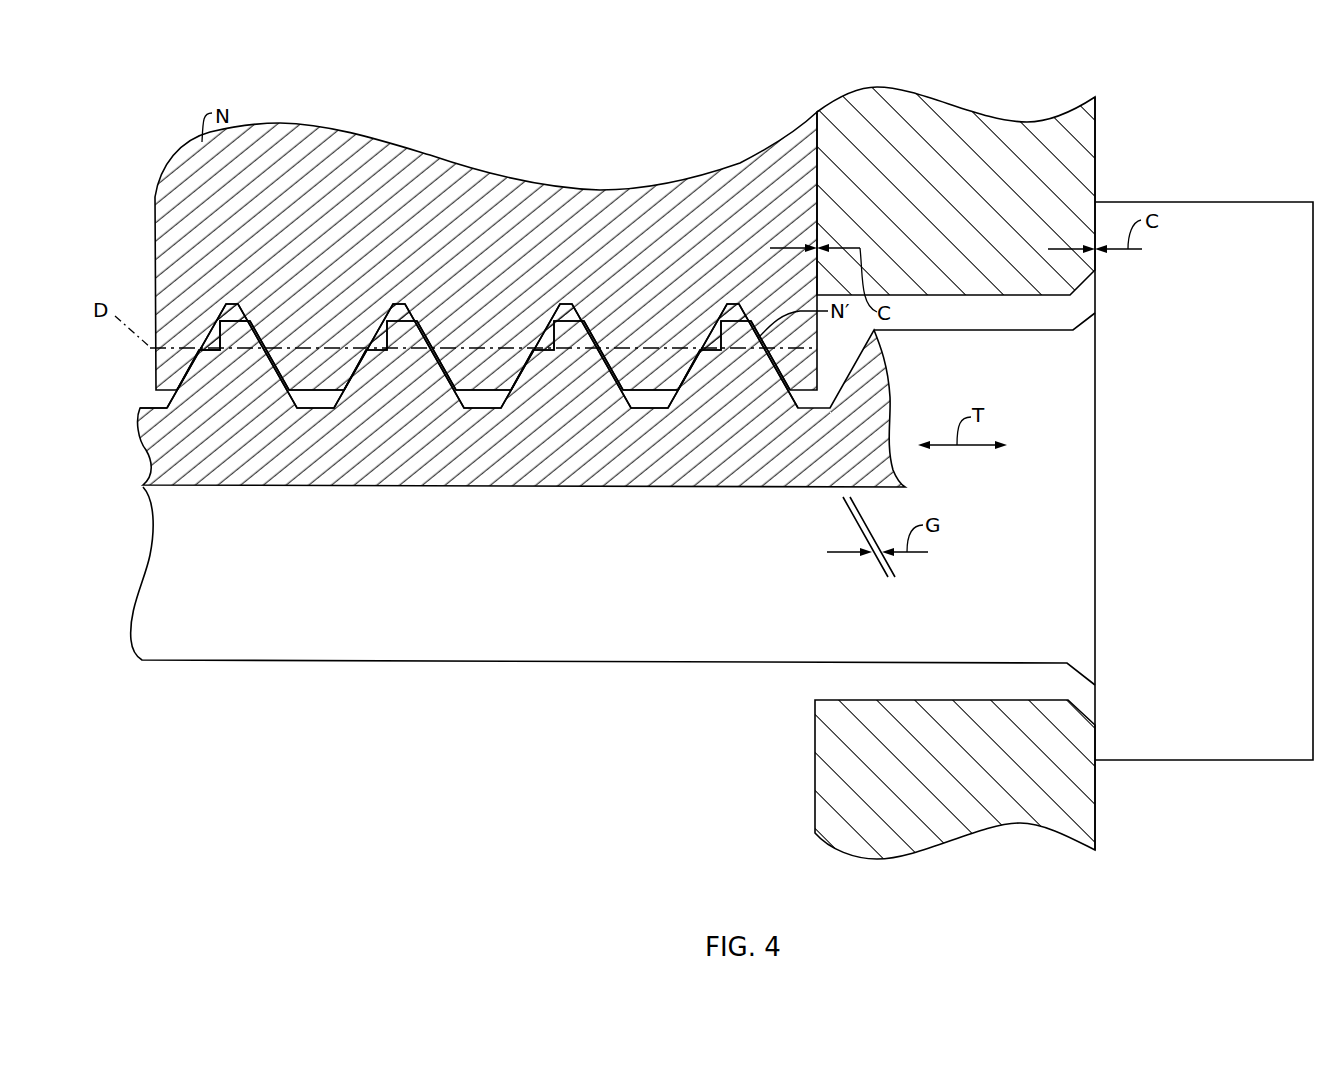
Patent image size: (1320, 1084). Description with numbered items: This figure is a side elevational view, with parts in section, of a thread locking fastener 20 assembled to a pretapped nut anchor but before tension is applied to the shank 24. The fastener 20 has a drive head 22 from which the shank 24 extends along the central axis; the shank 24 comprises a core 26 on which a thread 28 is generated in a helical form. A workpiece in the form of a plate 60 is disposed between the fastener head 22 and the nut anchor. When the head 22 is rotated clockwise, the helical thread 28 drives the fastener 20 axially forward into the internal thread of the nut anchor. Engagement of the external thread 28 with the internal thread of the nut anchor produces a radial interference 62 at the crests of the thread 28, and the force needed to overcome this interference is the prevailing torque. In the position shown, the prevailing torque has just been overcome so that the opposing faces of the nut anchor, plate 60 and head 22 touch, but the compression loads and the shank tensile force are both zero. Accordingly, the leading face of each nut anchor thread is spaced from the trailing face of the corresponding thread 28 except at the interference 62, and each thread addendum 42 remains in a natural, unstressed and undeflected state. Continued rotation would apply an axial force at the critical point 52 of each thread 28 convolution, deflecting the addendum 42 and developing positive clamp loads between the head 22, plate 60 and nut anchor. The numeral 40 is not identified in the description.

The thread locking fastener 20 is at (460, 719).
The drive head 22 is at (1173, 730).
The shank 24 is at (992, 320).
The core 26 is at (684, 640).
The thread 28 is at (411, 387).
The thread root surface 40 is at (203, 402).
The thread addendum 42 is at (222, 338).
The critical point 52 is at (265, 345).
The plate 60 is at (897, 87).
The radial interference 62 is at (405, 303).